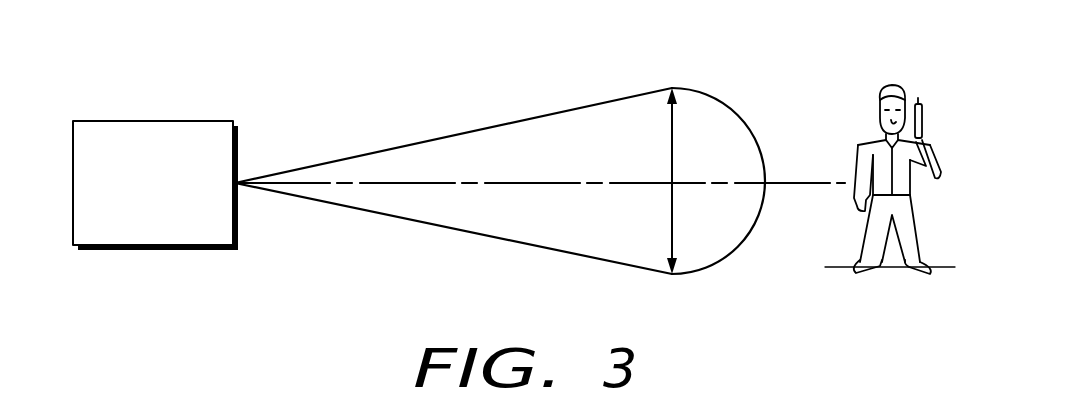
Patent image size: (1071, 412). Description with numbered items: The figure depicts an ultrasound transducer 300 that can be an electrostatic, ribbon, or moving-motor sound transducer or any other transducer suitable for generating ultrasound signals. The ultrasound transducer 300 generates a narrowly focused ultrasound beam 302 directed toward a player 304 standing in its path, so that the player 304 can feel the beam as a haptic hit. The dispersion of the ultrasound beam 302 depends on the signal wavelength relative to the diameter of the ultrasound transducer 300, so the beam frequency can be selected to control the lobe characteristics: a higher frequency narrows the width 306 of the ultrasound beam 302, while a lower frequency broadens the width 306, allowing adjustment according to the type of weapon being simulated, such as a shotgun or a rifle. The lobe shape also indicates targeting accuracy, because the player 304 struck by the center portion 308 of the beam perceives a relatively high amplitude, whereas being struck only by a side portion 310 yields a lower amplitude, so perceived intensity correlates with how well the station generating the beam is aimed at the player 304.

The ultrasound transducer 300 is at (155, 185).
The ultrasound beam 302 is at (598, 103).
The player 304 is at (877, 110).
The width 306 is at (673, 232).
The center portion 308 is at (685, 183).
The side portion 310 is at (672, 88).